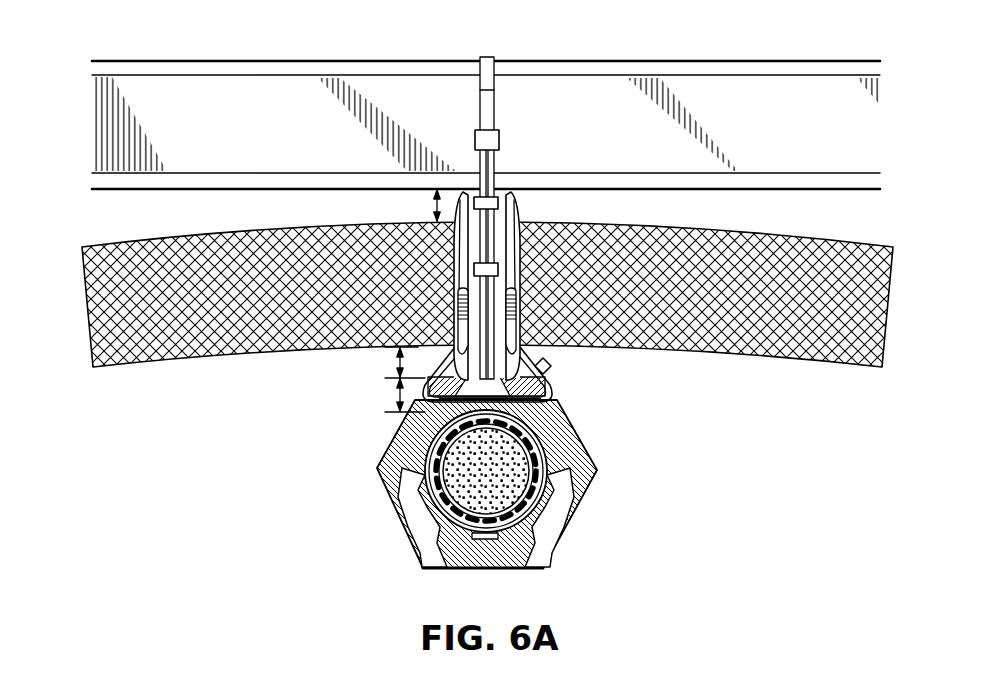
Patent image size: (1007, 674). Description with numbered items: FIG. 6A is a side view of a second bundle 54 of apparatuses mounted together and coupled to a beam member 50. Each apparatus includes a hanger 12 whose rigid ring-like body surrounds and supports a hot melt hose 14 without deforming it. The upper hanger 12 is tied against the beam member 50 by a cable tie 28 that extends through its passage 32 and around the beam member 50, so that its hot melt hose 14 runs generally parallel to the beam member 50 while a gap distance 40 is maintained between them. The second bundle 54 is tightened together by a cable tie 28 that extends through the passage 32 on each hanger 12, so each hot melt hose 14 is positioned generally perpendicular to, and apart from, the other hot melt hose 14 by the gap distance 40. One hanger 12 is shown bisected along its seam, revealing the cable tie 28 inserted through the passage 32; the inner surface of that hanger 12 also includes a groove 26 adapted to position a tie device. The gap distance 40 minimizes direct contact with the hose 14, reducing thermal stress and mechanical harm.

The hanger 12 is at (453, 272).
The hot melt hose 14 is at (194, 358).
The groove 26 is at (455, 252).
The cable tie 28 is at (488, 56).
The passage 32 is at (500, 204).
The gap distance 40 is at (436, 188).
The beam member 50 is at (270, 136).
The second bundle 54 is at (560, 357).